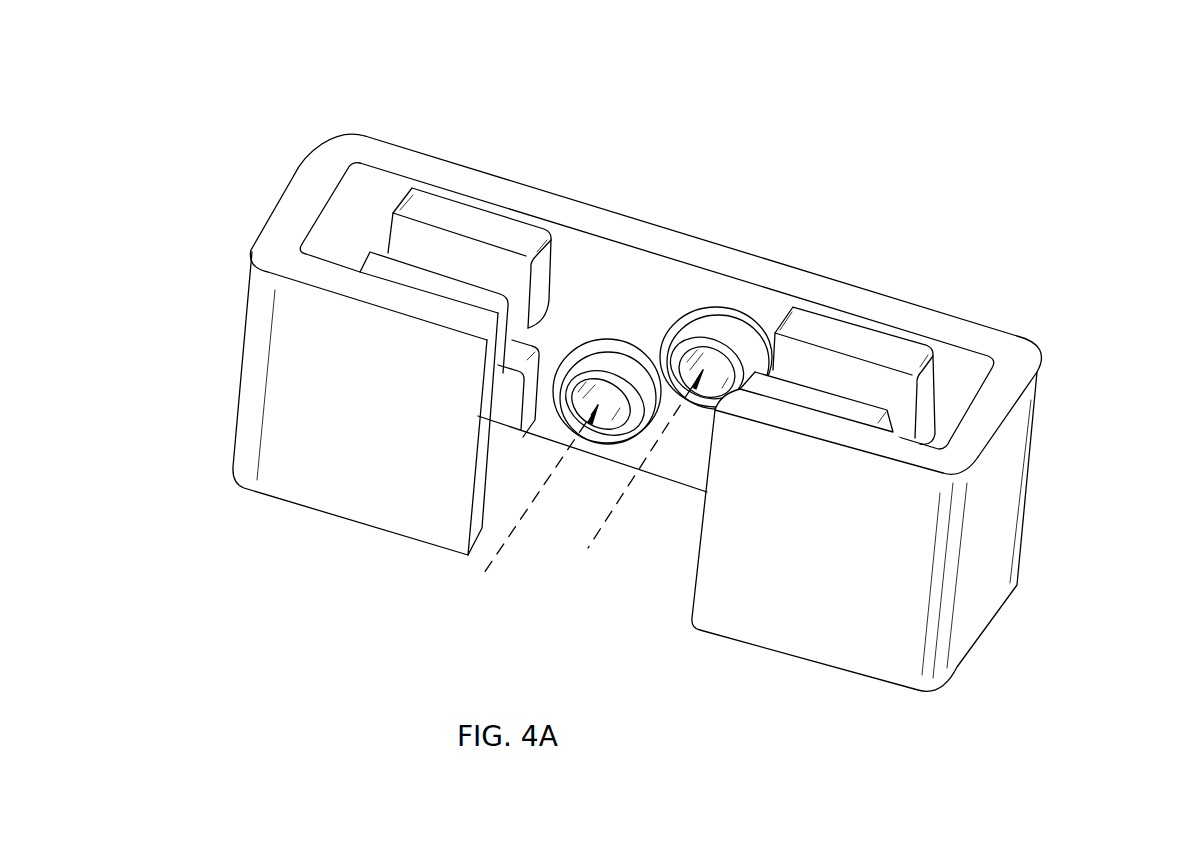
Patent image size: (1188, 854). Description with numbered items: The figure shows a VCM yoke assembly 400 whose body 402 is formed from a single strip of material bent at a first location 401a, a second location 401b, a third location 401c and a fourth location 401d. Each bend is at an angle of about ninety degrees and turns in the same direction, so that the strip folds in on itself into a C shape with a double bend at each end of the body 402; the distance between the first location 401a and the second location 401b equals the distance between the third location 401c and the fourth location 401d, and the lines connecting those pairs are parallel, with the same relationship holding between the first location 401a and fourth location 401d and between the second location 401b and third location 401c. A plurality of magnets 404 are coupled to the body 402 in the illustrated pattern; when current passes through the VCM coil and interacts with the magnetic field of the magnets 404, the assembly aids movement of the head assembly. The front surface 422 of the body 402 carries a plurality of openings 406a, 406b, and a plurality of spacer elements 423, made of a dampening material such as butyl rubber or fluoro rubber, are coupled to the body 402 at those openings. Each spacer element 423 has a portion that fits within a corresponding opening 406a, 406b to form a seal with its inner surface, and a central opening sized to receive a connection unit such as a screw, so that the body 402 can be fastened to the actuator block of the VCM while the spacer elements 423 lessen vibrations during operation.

The VCM yoke assembly 400 is at (235, 107).
The first location 401a is at (275, 252).
The second location 401b is at (342, 152).
The third location 401c is at (1025, 353).
The fourth location 401d is at (950, 460).
The body 402 is at (790, 618).
The magnets 404 is at (493, 226).
The opening 406a is at (498, 552).
The opening 406b is at (617, 502).
The front surface 422 is at (672, 300).
The spacer elements 423 is at (584, 362).